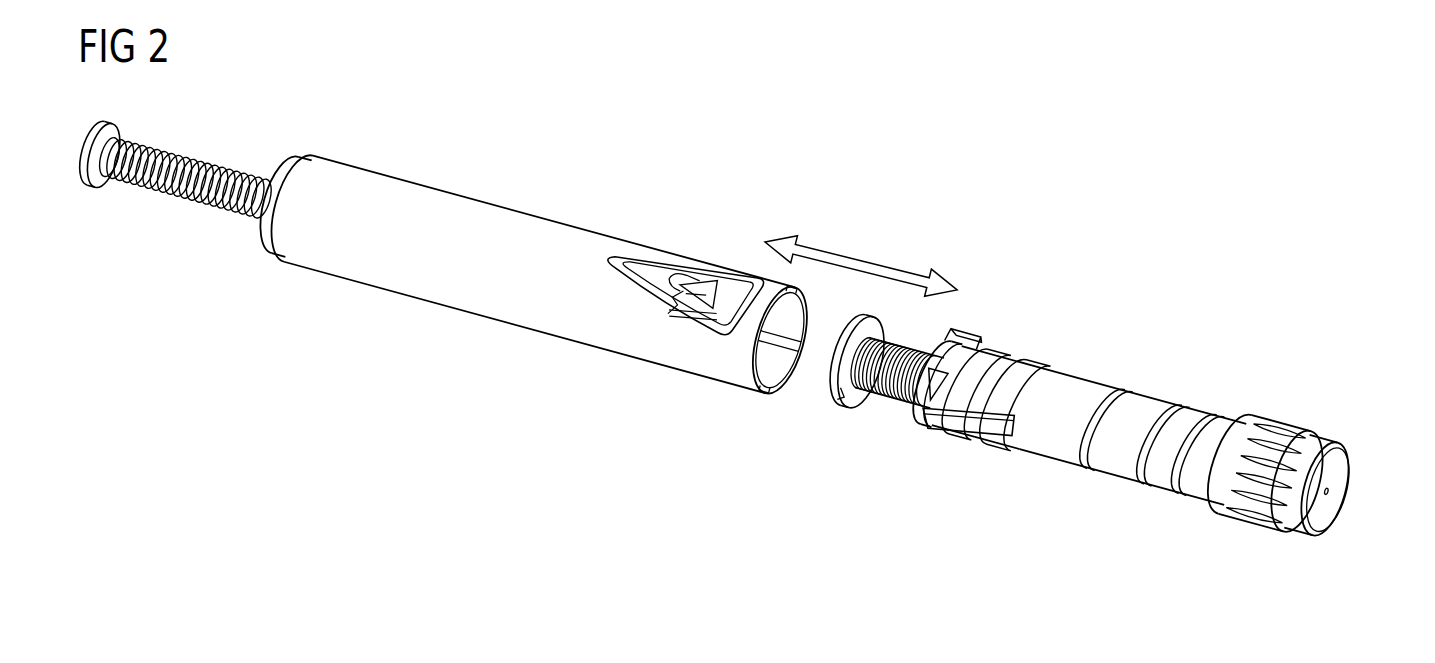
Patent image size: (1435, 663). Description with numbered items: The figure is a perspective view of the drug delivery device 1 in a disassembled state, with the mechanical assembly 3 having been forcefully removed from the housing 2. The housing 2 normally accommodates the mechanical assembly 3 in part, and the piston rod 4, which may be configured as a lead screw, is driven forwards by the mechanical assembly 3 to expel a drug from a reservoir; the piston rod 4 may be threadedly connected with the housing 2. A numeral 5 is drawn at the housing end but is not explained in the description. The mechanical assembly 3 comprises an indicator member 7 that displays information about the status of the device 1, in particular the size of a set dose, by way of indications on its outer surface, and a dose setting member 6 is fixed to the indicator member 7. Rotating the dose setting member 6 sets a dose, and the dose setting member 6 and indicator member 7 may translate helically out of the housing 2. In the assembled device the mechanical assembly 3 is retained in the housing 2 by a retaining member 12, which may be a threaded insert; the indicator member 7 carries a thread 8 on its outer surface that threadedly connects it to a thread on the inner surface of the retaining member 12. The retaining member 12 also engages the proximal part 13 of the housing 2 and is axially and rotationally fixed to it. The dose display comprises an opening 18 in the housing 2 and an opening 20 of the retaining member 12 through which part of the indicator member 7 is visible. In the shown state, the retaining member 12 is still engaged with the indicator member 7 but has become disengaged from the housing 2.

The drug delivery device 1 is at (446, 122).
The housing 2 is at (452, 290).
The mechanical assembly 3 is at (1132, 368).
The piston rod 4 is at (207, 180).
The end cap 5 is at (292, 170).
The dose setting member 6 is at (1268, 438).
The indicator member 7 is at (1114, 456).
The thread 8 is at (1085, 456).
The retaining member 12 is at (966, 430).
The proximal part 13 is at (824, 316).
The opening 18 is at (735, 298).
The opening 20 is at (998, 366).